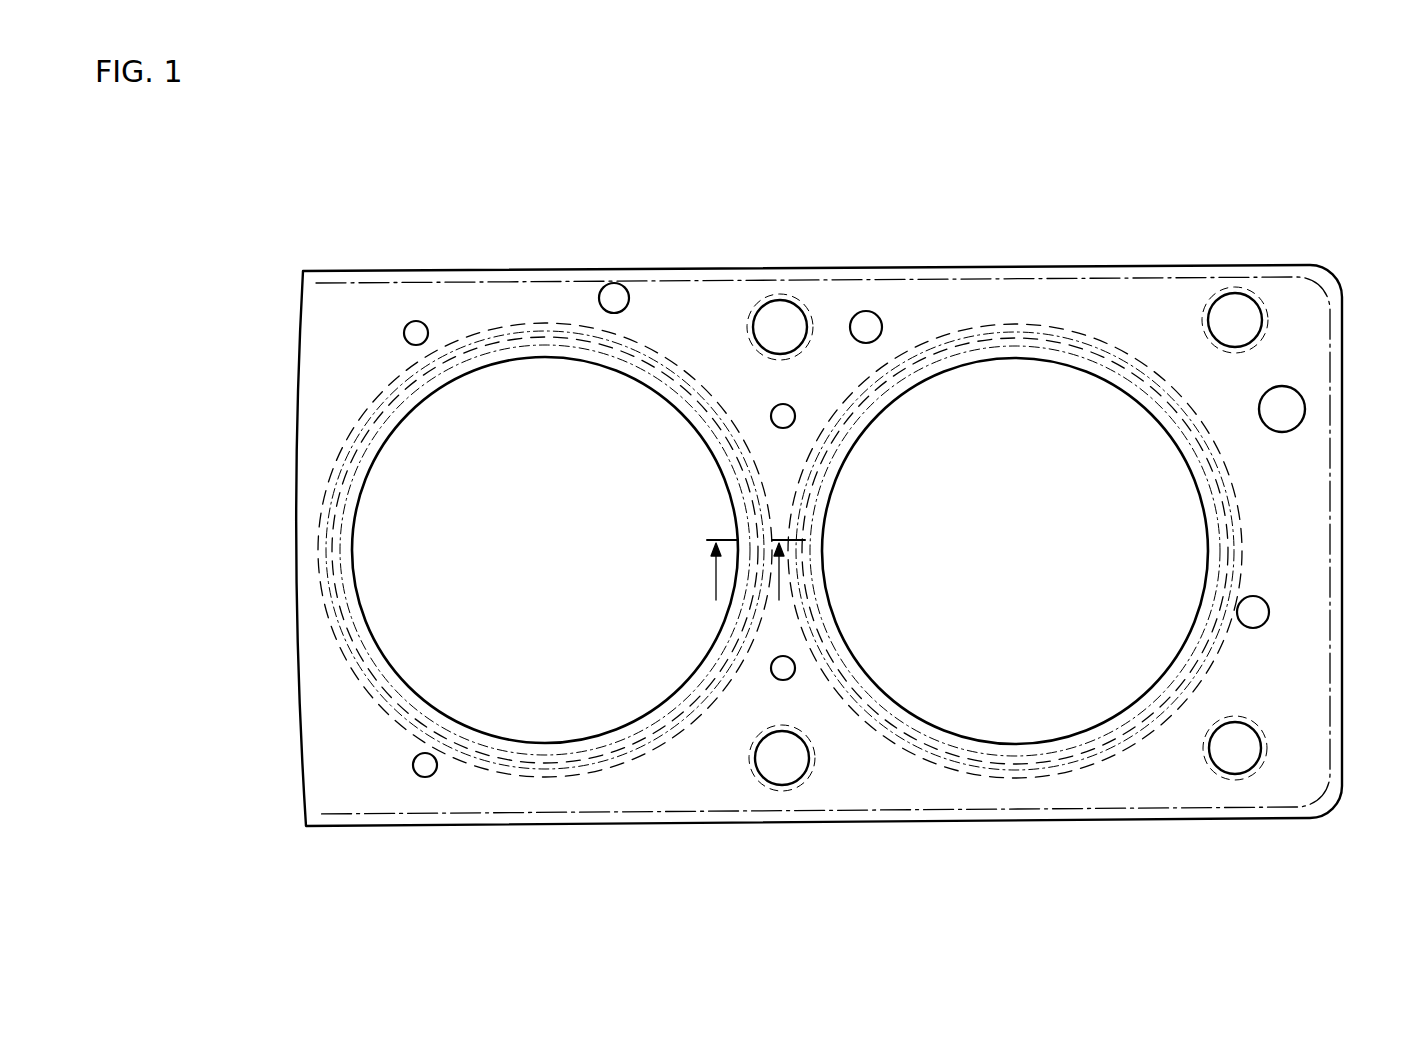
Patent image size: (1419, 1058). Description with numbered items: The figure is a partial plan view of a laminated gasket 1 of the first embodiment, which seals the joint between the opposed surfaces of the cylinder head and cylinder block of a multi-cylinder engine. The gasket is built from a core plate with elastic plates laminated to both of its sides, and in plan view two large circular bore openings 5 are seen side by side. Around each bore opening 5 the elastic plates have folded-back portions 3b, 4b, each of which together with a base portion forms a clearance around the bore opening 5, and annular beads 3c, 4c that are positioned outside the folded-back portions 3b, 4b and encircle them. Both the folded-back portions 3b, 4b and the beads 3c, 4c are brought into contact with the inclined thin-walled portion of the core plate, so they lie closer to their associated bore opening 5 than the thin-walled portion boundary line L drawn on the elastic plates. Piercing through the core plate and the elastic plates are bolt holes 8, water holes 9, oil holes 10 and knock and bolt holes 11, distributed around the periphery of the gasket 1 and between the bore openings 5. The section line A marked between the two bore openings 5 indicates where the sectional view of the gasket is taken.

The laminated gasket 1 is at (990, 250).
The bore opening 5 is at (538, 567).
The folded-back portion 3b is at (701, 608).
The folded-back portion 4b is at (351, 505).
The annular bead 3c is at (780, 496).
The annular bead 4c is at (642, 350).
The bolt hole 8 is at (777, 311).
The water hole 9 is at (415, 322).
The oil hole 10 is at (1302, 413).
The knock and bolt hole 11 is at (1234, 296).
The thin-walled portion boundary line L is at (528, 322).
The line A- A is at (754, 588).